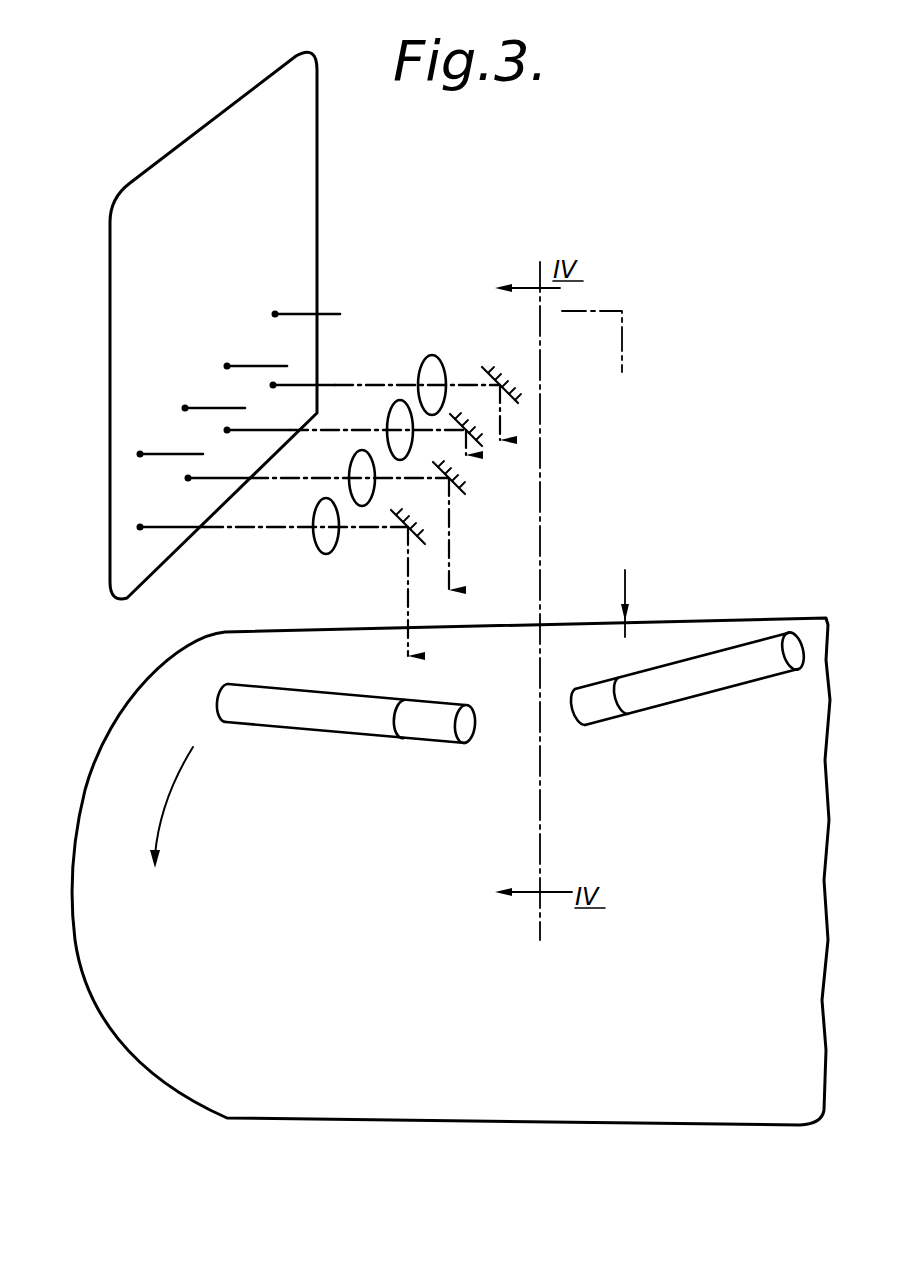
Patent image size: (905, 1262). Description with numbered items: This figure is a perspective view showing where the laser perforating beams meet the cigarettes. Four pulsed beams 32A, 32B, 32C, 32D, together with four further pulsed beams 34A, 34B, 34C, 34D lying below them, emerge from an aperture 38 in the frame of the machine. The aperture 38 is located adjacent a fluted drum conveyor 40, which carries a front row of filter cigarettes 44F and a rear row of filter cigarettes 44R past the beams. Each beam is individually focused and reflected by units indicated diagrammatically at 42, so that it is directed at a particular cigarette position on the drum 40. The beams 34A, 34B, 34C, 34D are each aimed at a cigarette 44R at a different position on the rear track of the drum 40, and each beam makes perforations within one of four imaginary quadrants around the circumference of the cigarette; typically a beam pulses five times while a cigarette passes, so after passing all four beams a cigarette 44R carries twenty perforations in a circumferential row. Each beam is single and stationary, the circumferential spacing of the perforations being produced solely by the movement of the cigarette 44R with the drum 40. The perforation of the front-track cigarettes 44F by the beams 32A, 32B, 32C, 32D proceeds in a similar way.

The aperture 38 is at (318, 200).
The pulsed beam 32A is at (163, 433).
The pulsed beam 32B is at (200, 406).
The pulsed beam 32C is at (247, 362).
The pulsed beam 32D is at (293, 313).
The pulsed beam 34A is at (182, 523).
The pulsed beam 34B is at (228, 477).
The pulsed beam 34C is at (268, 428).
The pulsed beam 34D is at (293, 383).
The focusing and reflecting units 42 is at (386, 564).
The fluted drum conveyor 40 is at (83, 797).
The rear row filter cigarettes 44R is at (358, 733).
The front row filter cigarettes 44F is at (689, 698).